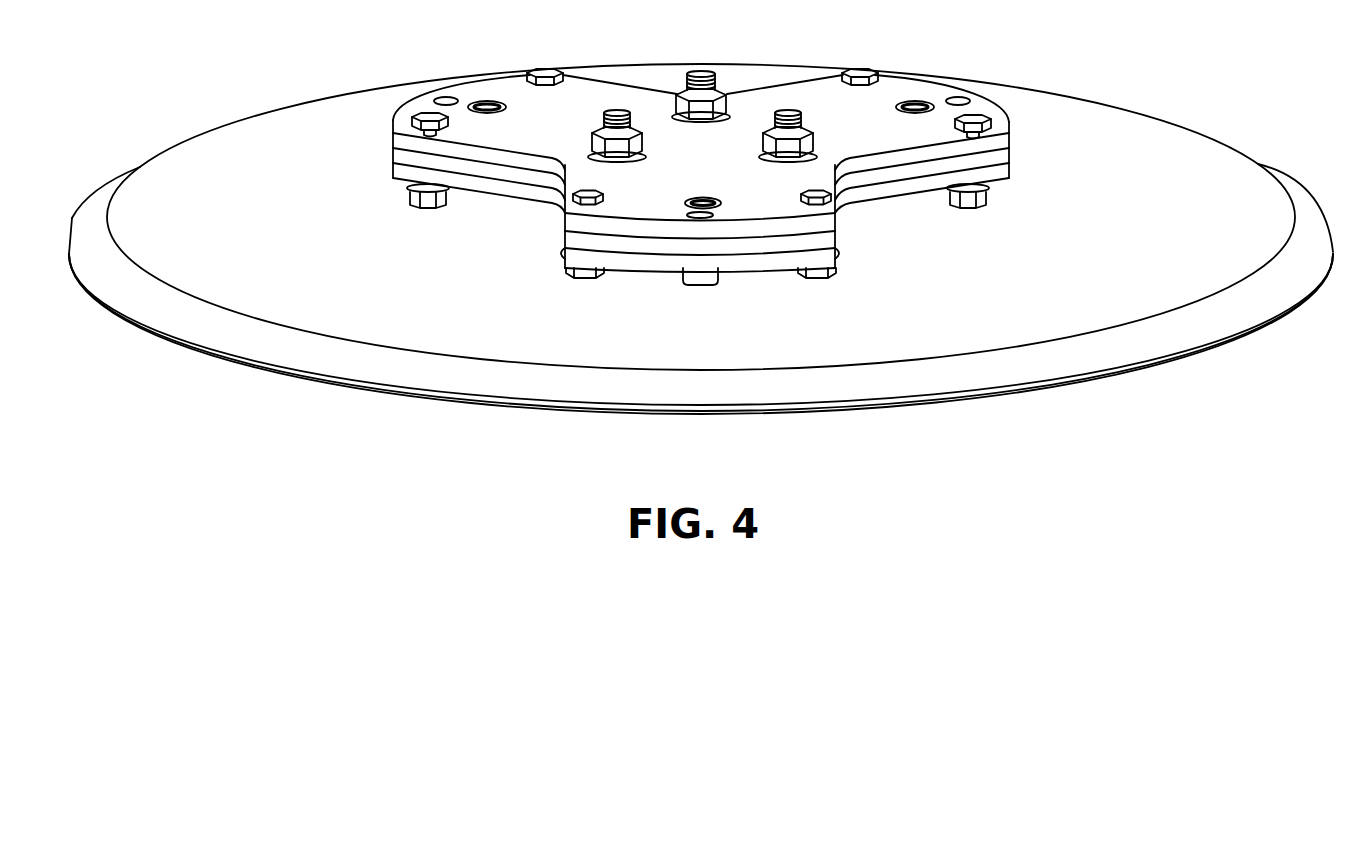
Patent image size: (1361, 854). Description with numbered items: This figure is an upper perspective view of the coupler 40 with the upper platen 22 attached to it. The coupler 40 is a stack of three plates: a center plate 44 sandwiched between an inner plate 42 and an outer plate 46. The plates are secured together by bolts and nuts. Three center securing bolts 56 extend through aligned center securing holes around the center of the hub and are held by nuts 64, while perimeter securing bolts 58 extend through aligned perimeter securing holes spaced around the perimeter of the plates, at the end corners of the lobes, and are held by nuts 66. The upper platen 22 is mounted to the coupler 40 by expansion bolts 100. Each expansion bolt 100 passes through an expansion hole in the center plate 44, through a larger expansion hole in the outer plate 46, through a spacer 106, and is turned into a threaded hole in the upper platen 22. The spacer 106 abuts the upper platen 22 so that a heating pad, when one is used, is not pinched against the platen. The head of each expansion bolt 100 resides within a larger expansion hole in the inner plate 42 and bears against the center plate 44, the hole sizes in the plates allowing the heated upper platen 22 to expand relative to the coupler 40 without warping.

The upper platen 22 is at (1170, 118).
The coupler 40 is at (738, 201).
The inner plate 42 is at (1010, 140).
The center plate 44 is at (1011, 157).
The outer plate 46 is at (1011, 174).
The center securing bolt 56 is at (612, 112).
The perimeter securing bolt 58 is at (537, 70).
The nut 64 is at (427, 207).
The nut 66 is at (672, 100).
The expansion bolt 100 is at (485, 113).
The spacer 106 is at (722, 277).